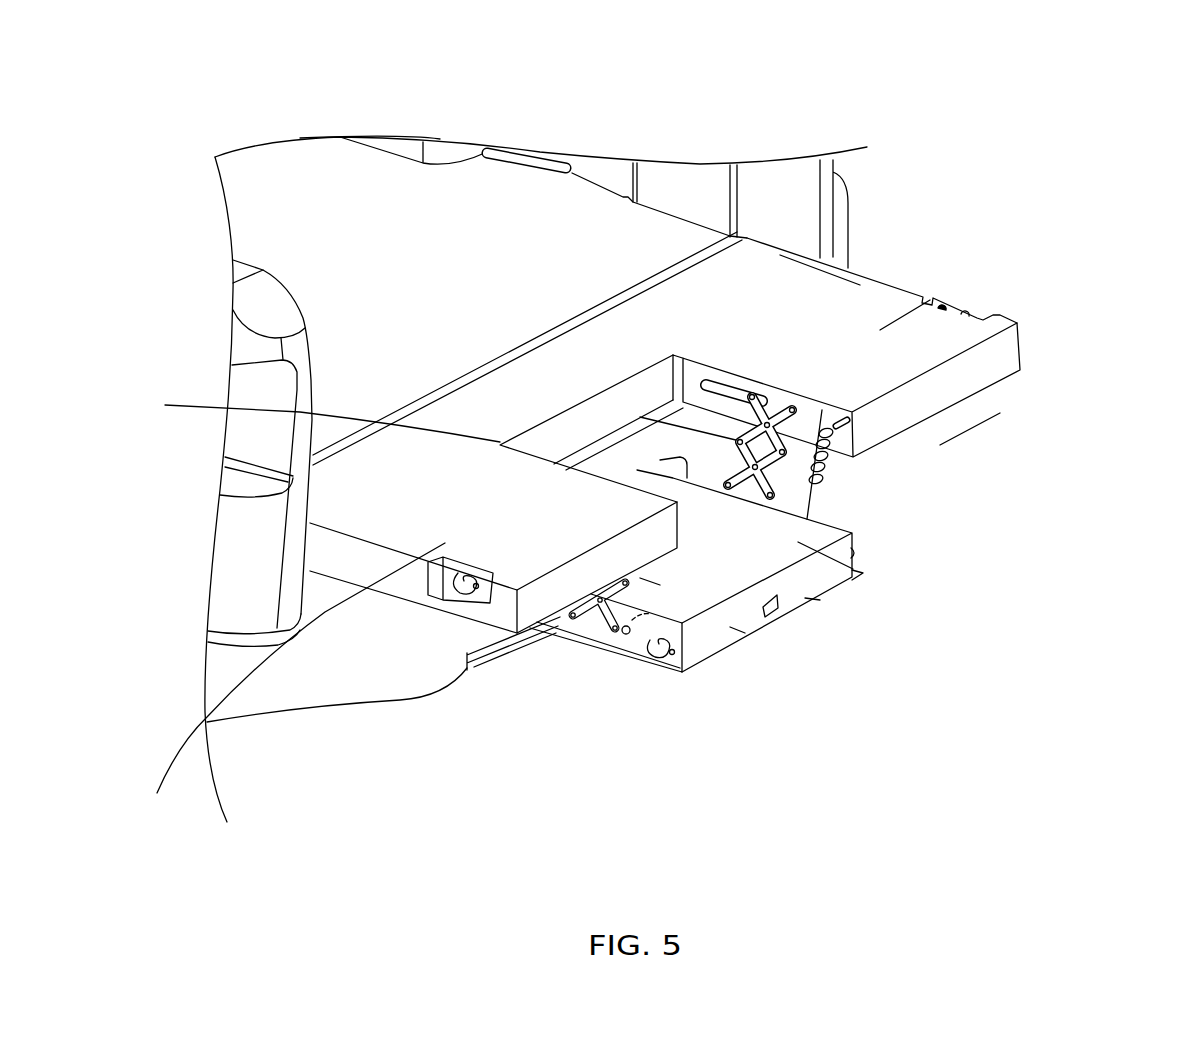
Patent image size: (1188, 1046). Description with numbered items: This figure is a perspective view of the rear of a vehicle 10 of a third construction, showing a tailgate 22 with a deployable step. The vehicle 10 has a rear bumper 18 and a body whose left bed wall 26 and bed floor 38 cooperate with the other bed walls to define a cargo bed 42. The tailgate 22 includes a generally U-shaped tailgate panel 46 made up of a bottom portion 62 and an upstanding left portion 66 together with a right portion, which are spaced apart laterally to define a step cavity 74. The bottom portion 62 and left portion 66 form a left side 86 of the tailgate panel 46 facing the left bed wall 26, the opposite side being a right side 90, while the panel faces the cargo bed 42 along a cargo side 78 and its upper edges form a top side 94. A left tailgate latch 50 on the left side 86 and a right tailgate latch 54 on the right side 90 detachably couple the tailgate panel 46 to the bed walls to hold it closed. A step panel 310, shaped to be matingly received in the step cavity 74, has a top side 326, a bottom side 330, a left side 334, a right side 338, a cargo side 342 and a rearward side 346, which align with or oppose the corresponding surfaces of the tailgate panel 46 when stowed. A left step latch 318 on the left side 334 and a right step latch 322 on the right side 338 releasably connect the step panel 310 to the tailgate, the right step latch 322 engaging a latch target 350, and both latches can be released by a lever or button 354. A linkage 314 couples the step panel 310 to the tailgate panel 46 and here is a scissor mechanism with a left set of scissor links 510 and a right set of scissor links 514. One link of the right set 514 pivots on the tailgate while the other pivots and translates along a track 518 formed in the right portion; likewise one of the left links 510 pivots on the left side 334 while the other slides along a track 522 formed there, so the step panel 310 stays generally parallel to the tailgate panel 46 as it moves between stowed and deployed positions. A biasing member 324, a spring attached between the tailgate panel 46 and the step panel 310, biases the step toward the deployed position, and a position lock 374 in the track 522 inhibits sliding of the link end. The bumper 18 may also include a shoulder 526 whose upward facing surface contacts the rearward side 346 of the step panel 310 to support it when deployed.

The vehicle 10 is at (437, 102).
The cargo bed 42 is at (350, 175).
The bed floor 38 is at (337, 270).
The left bed wall 26 is at (278, 305).
The step cavity 74 is at (587, 413).
The bottom portion 62 is at (612, 340).
The tailgate panel 46 is at (353, 498).
The left side 86 is at (353, 552).
The left portion 66 is at (282, 683).
The rear bumper 18 is at (287, 693).
The bottom side 330 is at (392, 494).
The left tailgate latch 50 is at (447, 598).
The shoulder 526 is at (467, 657).
The left side 334 is at (557, 620).
The left set of scissor links 510 is at (590, 617).
The position lock 374 is at (627, 635).
The track 522 is at (630, 638).
The left step latch 318 is at (678, 668).
The linkage 314 is at (644, 578).
The step panel 310 is at (825, 577).
The cargo side 342 is at (853, 569).
The right step latch 322 is at (858, 552).
The right side 338 is at (820, 525).
The rearward side 346 is at (820, 600).
The lever or button 354 is at (772, 612).
The top side 326 is at (730, 627).
The tailgate 22 is at (1023, 343).
The top side 94 is at (993, 363).
The right tailgate latch 54 is at (970, 310).
The cargo side 78 is at (908, 327).
The right side 90 is at (875, 327).
The track 518 is at (718, 383).
The right set of scissor links 514 is at (777, 395).
The biasing member 324 is at (825, 478).
The latch target 350 is at (853, 427).